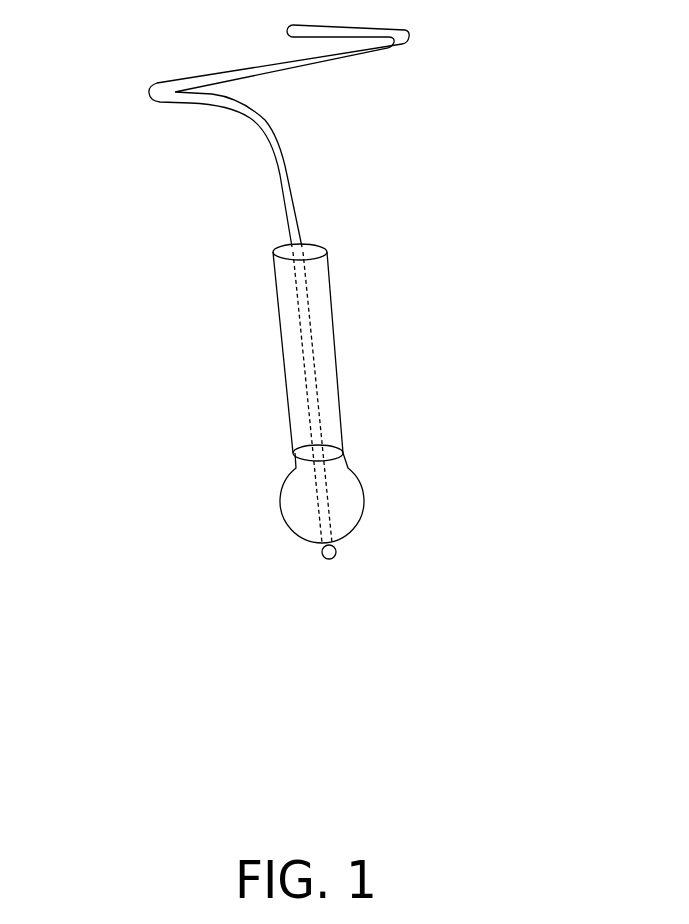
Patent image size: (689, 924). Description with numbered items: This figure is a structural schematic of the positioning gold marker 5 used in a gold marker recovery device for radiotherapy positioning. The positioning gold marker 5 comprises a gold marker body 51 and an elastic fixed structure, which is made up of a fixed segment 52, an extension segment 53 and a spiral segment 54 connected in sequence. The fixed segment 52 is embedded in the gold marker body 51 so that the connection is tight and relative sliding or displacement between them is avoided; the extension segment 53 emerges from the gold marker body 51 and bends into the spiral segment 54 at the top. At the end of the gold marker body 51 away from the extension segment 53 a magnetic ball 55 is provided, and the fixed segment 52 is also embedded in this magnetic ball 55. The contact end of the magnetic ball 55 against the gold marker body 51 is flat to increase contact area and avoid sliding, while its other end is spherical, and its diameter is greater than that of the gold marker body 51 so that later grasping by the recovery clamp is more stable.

The positioning gold marker body 5 is at (307, 292).
The gold marker body 51 is at (283, 363).
The fixed segment 52 is at (315, 363).
The extension segment 53 is at (280, 170).
The spiral segment 54 is at (283, 68).
The magnetic ball 55 is at (338, 487).